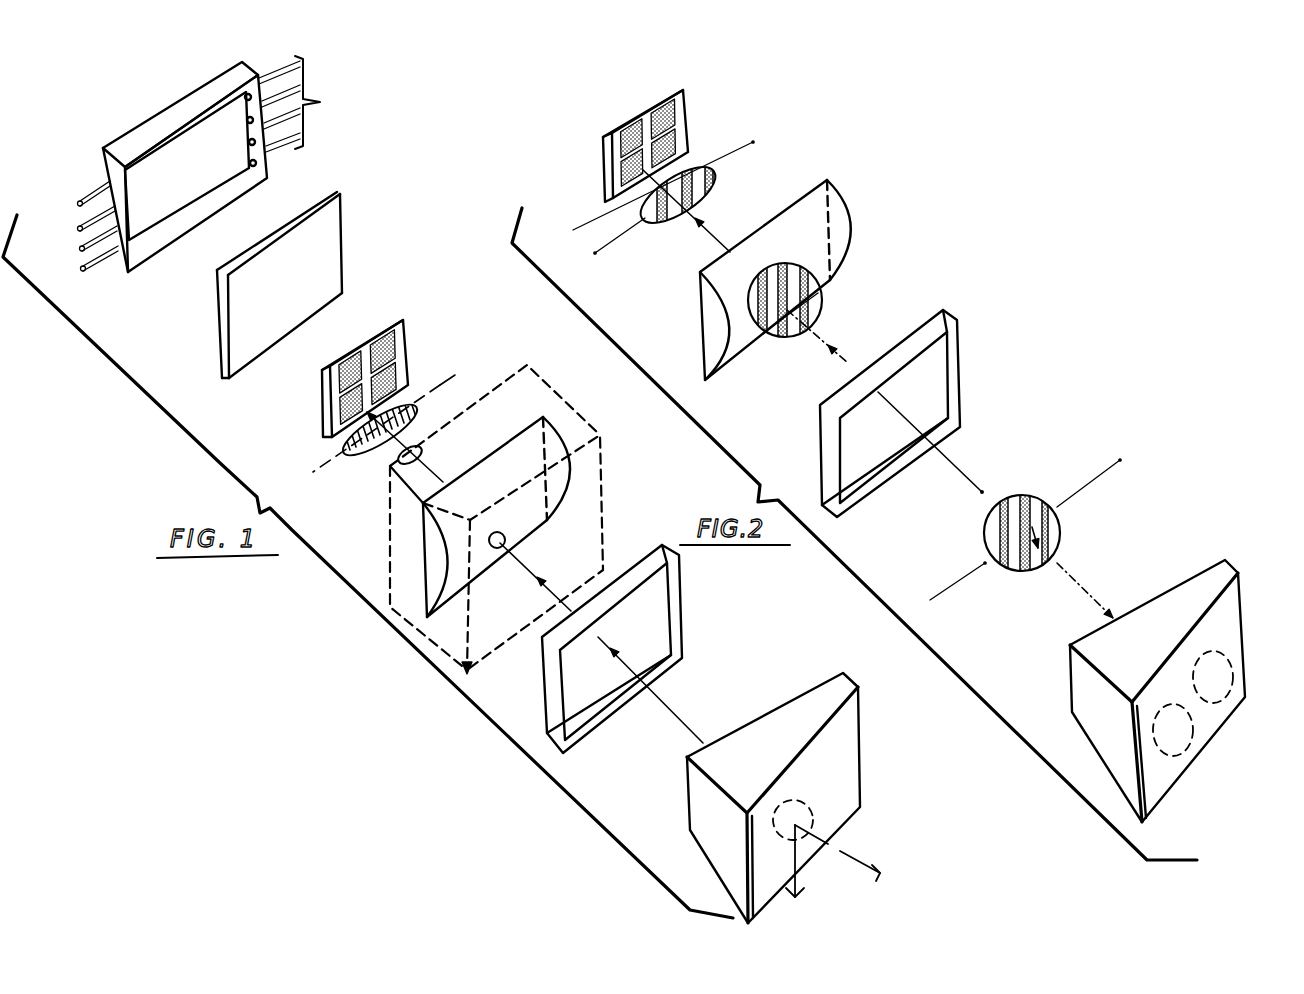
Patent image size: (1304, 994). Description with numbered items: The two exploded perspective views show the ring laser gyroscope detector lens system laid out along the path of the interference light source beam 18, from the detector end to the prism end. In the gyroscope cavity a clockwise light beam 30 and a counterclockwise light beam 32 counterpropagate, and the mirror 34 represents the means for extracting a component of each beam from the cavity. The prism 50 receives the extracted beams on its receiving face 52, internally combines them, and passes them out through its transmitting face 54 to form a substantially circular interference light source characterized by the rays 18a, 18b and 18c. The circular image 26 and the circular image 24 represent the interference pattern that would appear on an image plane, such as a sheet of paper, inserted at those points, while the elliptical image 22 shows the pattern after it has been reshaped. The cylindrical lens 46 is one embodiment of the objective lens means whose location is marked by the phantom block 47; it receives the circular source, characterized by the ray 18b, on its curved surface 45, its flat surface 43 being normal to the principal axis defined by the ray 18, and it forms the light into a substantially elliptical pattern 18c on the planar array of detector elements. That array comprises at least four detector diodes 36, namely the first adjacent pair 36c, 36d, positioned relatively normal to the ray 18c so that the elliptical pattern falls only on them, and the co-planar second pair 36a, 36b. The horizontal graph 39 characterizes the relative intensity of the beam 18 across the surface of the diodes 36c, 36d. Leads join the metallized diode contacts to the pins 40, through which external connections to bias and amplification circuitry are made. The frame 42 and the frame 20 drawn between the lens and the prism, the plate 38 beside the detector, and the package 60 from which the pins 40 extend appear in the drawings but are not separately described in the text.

In FIG. 1, the interference light source beam 18 is at (449, 480).
In FIG. 2, the ray 18a is at (947, 455).
In FIG. 2, the ray 18b is at (836, 350).
In FIG. 2, the ray 18c is at (703, 233).
In FIG. 2, the frame 20 is at (960, 368).
In FIG. 2, the elliptical image 22 is at (697, 197).
In FIG. 2, the circular image 24 is at (822, 303).
In FIG. 2, the circular image 26 is at (1033, 490).
In FIG. 1, the CW light beam 30 is at (795, 825).
In FIG. 2, the CW light beam 30 is at (833, 211).
In FIG. 1, the CCW light beam 32 is at (850, 855).
In FIG. 1, the mirror 34 is at (840, 727).
In FIG. 1, the filter plate 36 is at (370, 388).
In FIG. 2, the filter plate 36 is at (646, 152).
In FIG. 1, the detector diode 36a is at (350, 375).
In FIG. 2, the detector diode 36a is at (617, 140).
In FIG. 1, the detector diode 36b is at (416, 345).
In FIG. 2, the detector diode 36b is at (663, 108).
In FIG. 1, the detector diode 36c is at (342, 415).
In FIG. 2, the detector diode 36c is at (620, 177).
In FIG. 1, the detector diode 36d is at (395, 372).
In FIG. 2, the detector diode 36d is at (677, 135).
In FIG. 1, the plate 38 is at (312, 257).
In FIG. 1, the horizontal graph 39 is at (417, 409).
In FIG. 1, the pins 40 is at (322, 102).
In FIG. 1, the frame 42 is at (682, 612).
In FIG. 1, the flat surface 43 is at (510, 440).
In FIG. 1, the curved surface 45 is at (553, 495).
In FIG. 1, the cylindrical lens 46 is at (514, 517).
In FIG. 1, the phantom block 47 is at (390, 533).
In FIG. 1, the prism 50 is at (783, 752).
In FIG. 2, the prism 50 is at (1152, 658).
In FIG. 2, the receiving face 52 is at (1153, 770).
In FIG. 2, the transmitting face 54 is at (1080, 633).
In FIG. 1, the light source 60 is at (248, 193).